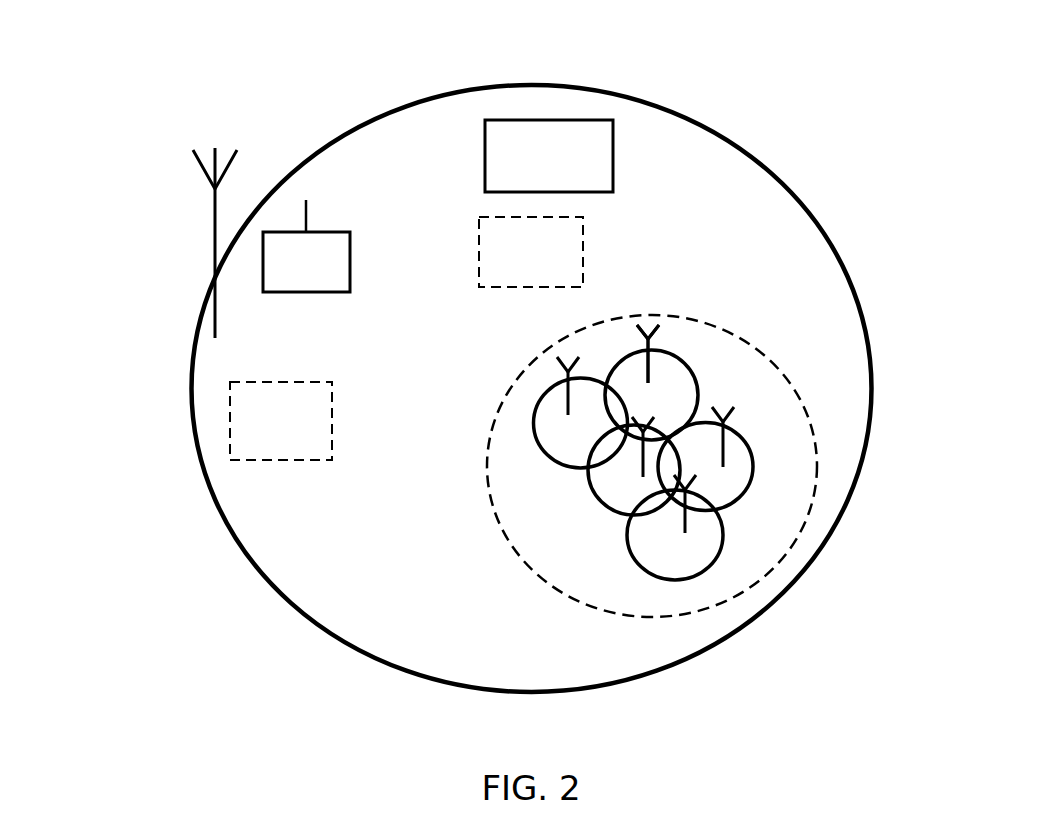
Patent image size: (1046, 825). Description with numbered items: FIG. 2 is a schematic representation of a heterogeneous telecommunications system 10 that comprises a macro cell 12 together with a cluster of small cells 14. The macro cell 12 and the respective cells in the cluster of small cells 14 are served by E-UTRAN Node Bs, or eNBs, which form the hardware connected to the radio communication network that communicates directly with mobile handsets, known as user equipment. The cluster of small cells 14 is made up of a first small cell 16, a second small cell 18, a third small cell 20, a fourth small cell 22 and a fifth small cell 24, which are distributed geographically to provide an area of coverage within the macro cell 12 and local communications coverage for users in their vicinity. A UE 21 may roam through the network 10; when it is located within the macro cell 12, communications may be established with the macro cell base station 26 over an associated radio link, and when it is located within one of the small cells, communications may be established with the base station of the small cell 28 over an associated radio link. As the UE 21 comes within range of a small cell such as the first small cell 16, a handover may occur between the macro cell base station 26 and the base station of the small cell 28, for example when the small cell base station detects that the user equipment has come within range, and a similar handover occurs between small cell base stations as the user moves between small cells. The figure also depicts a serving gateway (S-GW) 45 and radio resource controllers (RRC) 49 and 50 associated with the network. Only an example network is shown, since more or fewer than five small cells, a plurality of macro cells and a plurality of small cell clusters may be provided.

The heterogeneous telecommunications system 10 is at (63, 142).
The macro cell 12 is at (685, 113).
The cluster of small cells 14 is at (487, 484).
The first small cell 16 is at (621, 358).
The second small cell 18 is at (753, 463).
The third small cell 20 is at (534, 424).
The UE 21 is at (350, 252).
The fourth small cell 22 is at (592, 493).
The fifth small cell 24 is at (723, 535).
The macro cell base station 26 is at (213, 216).
The base station of the small cell 28 is at (650, 337).
The serving gateway (S-GW) 45 is at (531, 186).
The radio resource controller (RRC) 49 is at (514, 279).
The radio resource controller (RRC) 50 is at (264, 451).